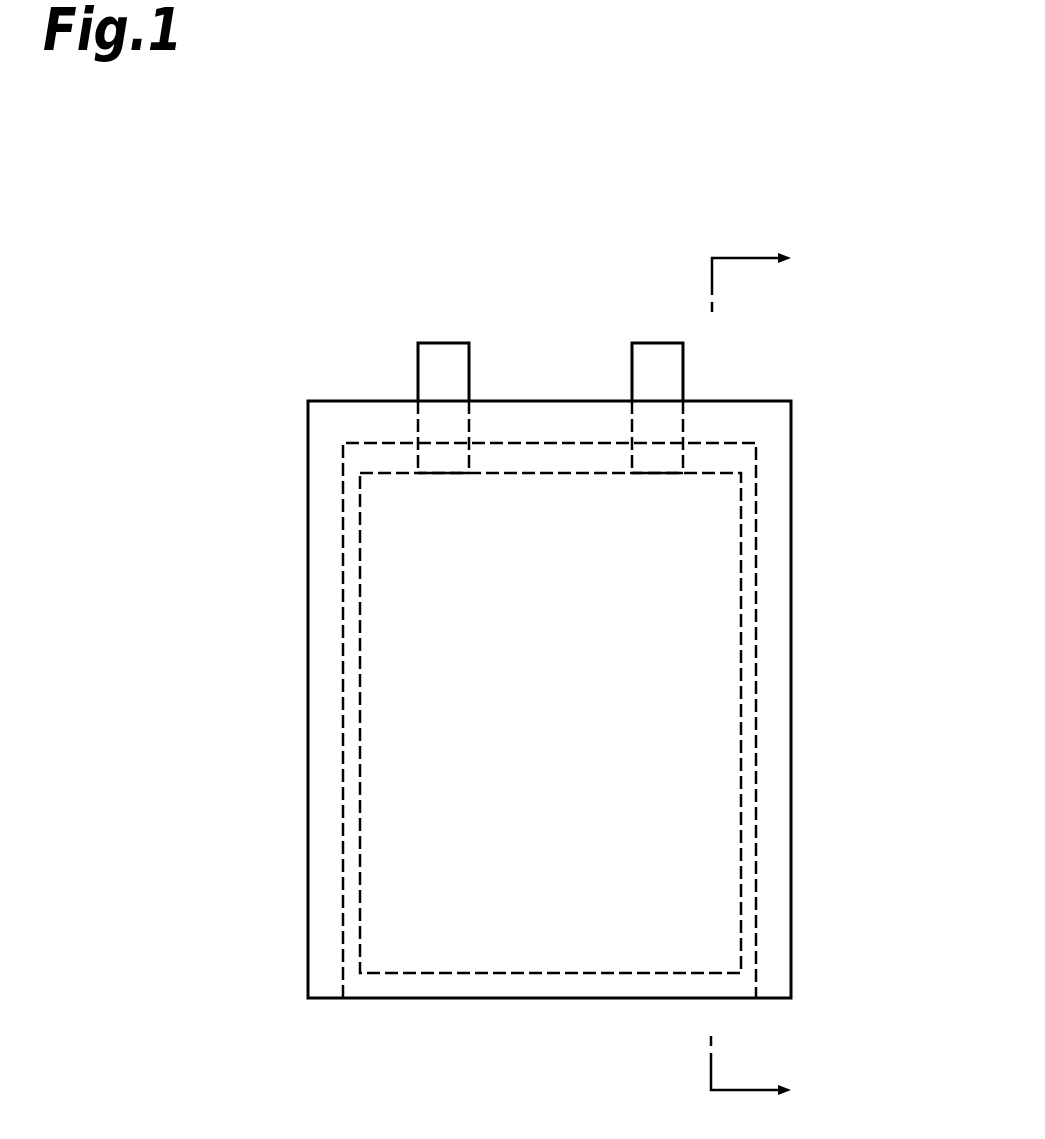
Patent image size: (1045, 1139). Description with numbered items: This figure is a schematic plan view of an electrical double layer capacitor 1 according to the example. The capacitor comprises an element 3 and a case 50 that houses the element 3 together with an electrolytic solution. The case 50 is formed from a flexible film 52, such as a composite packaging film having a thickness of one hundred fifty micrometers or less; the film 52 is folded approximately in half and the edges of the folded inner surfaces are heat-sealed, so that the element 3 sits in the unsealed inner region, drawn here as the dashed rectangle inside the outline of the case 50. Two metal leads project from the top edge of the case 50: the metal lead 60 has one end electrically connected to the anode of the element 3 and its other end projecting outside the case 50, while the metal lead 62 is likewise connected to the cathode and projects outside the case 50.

The electrical double layer capacitor 1 is at (297, 314).
The element 3 is at (590, 975).
The case 50 is at (797, 513).
The film 52 is at (323, 862).
The metal lead 60 is at (443, 343).
The metal lead 62 is at (656, 343).